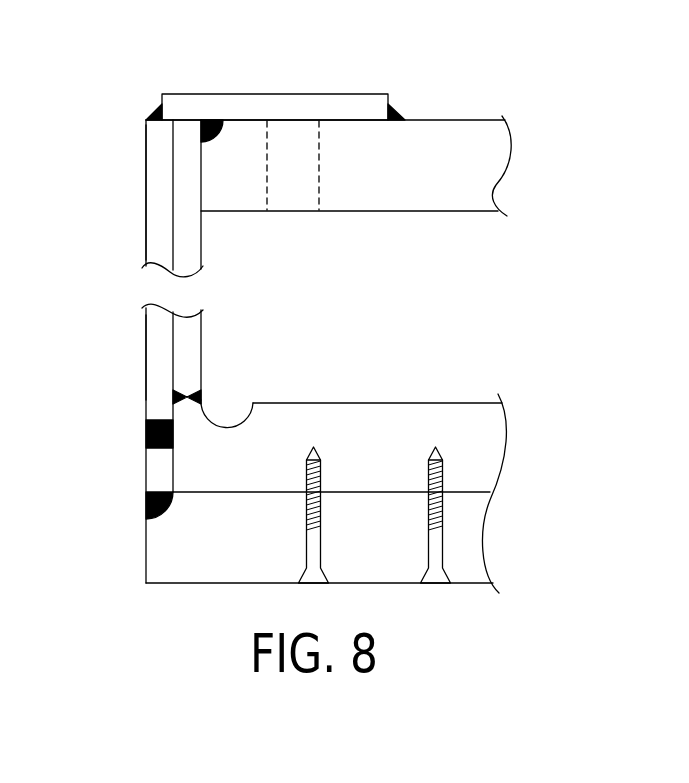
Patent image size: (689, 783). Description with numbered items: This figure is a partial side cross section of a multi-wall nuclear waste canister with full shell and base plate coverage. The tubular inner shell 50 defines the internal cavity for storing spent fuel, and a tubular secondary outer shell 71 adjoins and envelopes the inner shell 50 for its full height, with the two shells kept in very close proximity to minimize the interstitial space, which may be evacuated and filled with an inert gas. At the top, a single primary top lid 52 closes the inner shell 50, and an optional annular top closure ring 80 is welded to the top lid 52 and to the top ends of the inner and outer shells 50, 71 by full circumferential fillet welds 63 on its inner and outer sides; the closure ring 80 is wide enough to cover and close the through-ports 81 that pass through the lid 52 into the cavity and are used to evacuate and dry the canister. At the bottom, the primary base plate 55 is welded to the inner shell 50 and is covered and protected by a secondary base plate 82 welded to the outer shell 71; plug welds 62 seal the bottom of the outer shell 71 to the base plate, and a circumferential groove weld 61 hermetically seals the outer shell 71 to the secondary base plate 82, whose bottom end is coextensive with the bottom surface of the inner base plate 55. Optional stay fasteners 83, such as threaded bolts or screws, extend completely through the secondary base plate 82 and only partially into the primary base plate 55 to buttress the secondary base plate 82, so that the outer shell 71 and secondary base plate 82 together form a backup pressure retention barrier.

The inner shell 50 is at (202, 255).
The outer shell 71 is at (146, 232).
The annular top closure ring 80 is at (285, 94).
The fillet weld 63 is at (156, 113).
The groove weld 61 is at (208, 120).
The plug weld 62 is at (146, 435).
The top lid 52 is at (461, 119).
The through-port 81 is at (322, 187).
The primary base plate 55 is at (337, 420).
The secondary base plate 82 is at (463, 502).
The stay fastener 83 is at (443, 543).